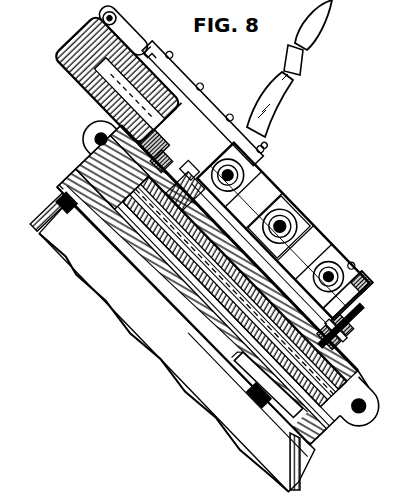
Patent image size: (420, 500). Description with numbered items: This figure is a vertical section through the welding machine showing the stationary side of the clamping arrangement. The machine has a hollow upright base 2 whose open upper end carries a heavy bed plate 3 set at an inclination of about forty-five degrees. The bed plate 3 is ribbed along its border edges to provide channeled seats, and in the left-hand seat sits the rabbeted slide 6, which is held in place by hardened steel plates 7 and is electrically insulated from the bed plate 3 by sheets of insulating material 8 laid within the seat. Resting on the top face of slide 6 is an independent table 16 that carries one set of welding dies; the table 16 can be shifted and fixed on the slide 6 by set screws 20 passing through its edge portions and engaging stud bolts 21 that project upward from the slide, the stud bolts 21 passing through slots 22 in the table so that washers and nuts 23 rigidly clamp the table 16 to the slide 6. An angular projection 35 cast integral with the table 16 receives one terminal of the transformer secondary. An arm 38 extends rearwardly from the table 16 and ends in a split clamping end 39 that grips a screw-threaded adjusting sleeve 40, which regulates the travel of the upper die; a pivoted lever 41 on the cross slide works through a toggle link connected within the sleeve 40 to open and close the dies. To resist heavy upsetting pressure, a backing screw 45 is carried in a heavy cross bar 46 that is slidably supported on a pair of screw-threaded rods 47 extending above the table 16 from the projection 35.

The hollow upright base 2 is at (302, 474).
The bed plate 3 is at (336, 434).
The slide 6 is at (246, 384).
The hardened steel plate 7 is at (333, 370).
The electrical insulating material 8 is at (123, 255).
The table 16 is at (187, 317).
The set screw 20 is at (160, 163).
The stud bolt 21 is at (191, 170).
The slot 22 is at (335, 318).
The washers and nuts 23 is at (353, 305).
The angular projection 35 is at (356, 279).
The arm 38 is at (62, 62).
The split clamping end 39 is at (95, 20).
The adjusting sleeve 40 is at (132, 52).
The pivoted lever 41 is at (279, 91).
The backing screw 45 is at (291, 216).
The cross bar 46 is at (263, 193).
The screw-threaded rod 47 is at (263, 153).